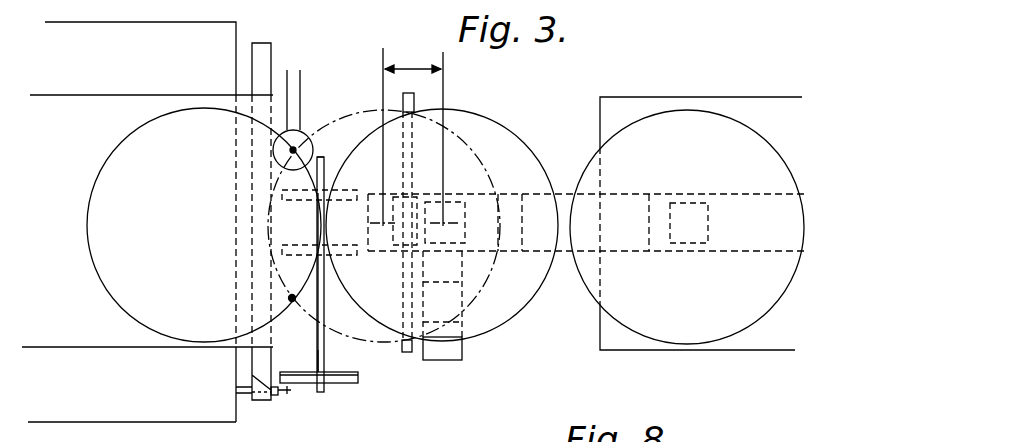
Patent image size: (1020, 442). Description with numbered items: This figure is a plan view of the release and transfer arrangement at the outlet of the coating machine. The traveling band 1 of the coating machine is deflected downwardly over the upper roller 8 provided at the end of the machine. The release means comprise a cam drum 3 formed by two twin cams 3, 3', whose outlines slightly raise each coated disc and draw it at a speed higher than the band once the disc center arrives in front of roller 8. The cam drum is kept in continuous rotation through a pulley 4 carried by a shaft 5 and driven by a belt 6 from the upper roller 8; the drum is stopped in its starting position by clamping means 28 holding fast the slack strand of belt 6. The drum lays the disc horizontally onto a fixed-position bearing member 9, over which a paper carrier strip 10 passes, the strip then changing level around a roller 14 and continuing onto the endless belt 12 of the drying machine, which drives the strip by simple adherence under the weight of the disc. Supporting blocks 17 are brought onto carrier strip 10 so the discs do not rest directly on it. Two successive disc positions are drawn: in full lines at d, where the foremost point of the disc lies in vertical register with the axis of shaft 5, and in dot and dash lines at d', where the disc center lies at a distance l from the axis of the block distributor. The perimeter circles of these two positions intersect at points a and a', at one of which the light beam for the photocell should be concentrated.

The traveling band 1 is at (66, 348).
The cam drum 3 is at (319, 274).
The twin cam 3' is at (335, 143).
The pulley 4 is at (344, 384).
The shaft 5 is at (322, 352).
The belt 6 is at (274, 398).
The upper roller 8 is at (263, 402).
The bearing member 9 is at (395, 250).
The carrier strip 10 is at (566, 256).
The endless belt 12 is at (705, 101).
The roller 14 is at (405, 353).
The supporting blocks 17 is at (466, 298).
The clamping means 28 is at (293, 393).
The intersecting point a is at (300, 120).
The intersecting point a' is at (292, 318).
The disc position in full lines d is at (183, 225).
The disc position in dot and dash lines d' is at (384, 205).
The distance l is at (413, 134).